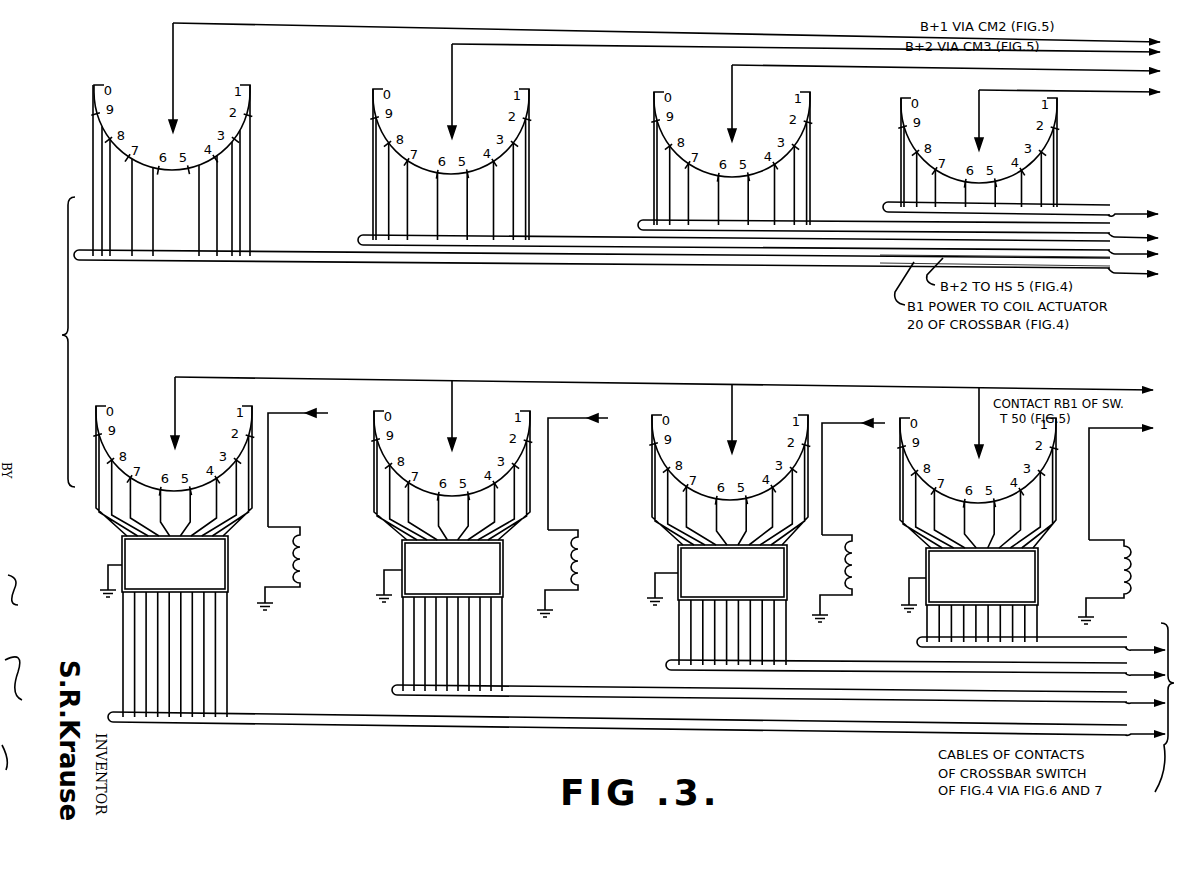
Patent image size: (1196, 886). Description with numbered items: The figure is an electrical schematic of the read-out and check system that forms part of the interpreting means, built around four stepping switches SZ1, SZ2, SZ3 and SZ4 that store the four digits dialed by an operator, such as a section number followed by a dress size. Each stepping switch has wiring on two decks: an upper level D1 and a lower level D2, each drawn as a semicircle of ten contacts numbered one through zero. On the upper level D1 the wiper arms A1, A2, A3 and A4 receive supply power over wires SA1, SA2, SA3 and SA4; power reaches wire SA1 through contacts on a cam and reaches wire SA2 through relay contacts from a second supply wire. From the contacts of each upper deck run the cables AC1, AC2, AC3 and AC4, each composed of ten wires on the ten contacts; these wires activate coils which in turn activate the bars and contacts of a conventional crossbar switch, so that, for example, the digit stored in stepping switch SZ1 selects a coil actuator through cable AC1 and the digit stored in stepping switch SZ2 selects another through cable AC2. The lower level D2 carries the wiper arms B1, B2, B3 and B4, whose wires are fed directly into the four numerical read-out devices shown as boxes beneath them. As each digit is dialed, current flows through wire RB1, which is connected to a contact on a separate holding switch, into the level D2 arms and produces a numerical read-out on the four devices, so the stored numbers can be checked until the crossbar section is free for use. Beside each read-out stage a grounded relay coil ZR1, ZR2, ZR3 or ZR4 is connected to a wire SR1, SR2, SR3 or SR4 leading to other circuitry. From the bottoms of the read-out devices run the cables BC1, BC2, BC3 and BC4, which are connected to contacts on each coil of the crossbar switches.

The wire SA1 is at (666, 33).
The wire SA2 is at (806, 50).
The wire SA3 is at (946, 65).
The wire SA4 is at (1069, 84).
The level D1 is at (590, 86).
The level D2 is at (591, 417).
The wiper arm A1 is at (171, 169).
The wiper arm A2 is at (450, 163).
The wiper arm A3 is at (731, 157).
The wiper arm A4 is at (978, 151).
The stepping switch SZ1 is at (562, 255).
The stepping switch SZ2 is at (711, 242).
The stepping switch SZ3 is at (847, 227).
The stepping switch SZ4 is at (973, 207).
The cable AC1 is at (1133, 266).
The cable AC2 is at (1133, 246).
The cable AC3 is at (1133, 230).
The cable AC4 is at (1133, 207).
The wire RB1 is at (664, 380).
The arm B1 is at (173, 560).
The arm B2 is at (451, 550).
The arm B3 is at (728, 539).
The arm B4 is at (977, 529).
The wire SR1 is at (308, 468).
The wire SR2 is at (588, 472).
The wire SR3 is at (853, 470).
The wire SR4 is at (1121, 484).
The relay coil ZR1 is at (298, 568).
The relay coil ZR2 is at (579, 573).
The relay coil ZR3 is at (852, 578).
The relay coil ZR4 is at (1103, 582).
The cable BC1 is at (636, 723).
The cable BC2 is at (778, 694).
The cable BC3 is at (915, 667).
The cable BC4 is at (1041, 641).